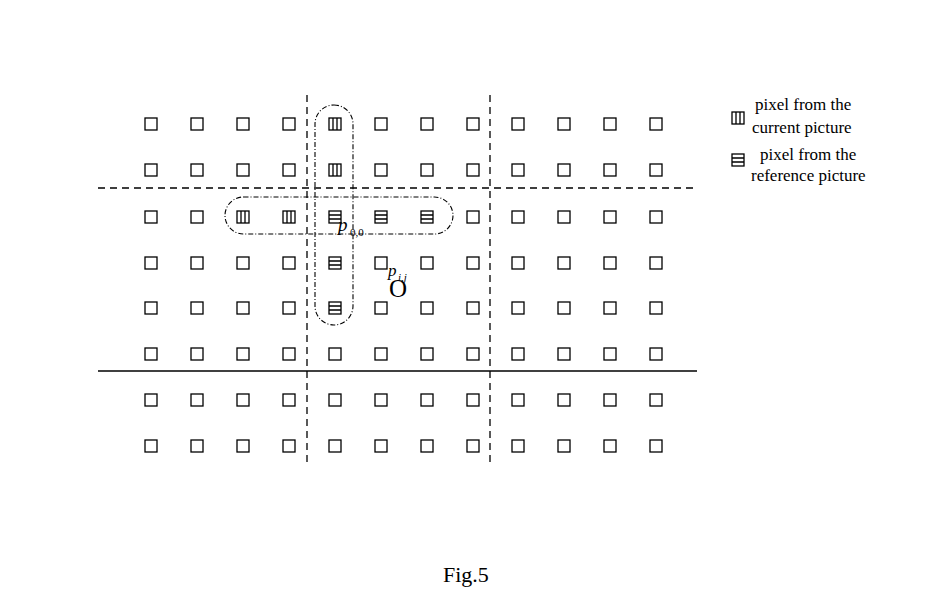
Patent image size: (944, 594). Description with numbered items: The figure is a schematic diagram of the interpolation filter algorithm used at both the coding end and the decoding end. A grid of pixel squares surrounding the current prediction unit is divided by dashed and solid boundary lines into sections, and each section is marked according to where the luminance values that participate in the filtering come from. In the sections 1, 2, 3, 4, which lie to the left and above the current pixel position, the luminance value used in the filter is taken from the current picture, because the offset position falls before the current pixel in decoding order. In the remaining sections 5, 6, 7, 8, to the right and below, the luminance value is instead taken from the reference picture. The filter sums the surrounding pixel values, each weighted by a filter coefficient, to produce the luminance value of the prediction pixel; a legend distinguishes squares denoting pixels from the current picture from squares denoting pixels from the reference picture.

The section 1 is at (122, 279).
The section 2 is at (213, 106).
The section 3 is at (397, 106).
The section 4 is at (583, 107).
The section 5 is at (673, 278).
The section 6 is at (673, 417).
The section 7 is at (398, 463).
The section 8 is at (214, 463).